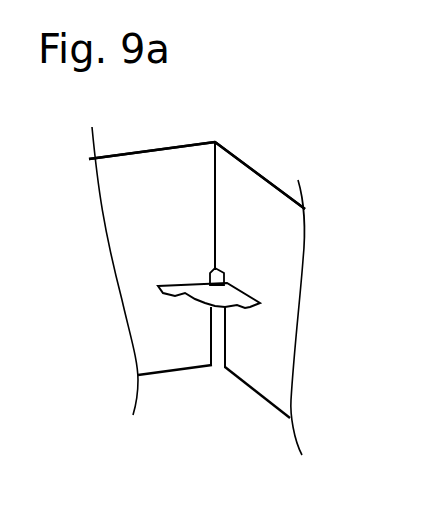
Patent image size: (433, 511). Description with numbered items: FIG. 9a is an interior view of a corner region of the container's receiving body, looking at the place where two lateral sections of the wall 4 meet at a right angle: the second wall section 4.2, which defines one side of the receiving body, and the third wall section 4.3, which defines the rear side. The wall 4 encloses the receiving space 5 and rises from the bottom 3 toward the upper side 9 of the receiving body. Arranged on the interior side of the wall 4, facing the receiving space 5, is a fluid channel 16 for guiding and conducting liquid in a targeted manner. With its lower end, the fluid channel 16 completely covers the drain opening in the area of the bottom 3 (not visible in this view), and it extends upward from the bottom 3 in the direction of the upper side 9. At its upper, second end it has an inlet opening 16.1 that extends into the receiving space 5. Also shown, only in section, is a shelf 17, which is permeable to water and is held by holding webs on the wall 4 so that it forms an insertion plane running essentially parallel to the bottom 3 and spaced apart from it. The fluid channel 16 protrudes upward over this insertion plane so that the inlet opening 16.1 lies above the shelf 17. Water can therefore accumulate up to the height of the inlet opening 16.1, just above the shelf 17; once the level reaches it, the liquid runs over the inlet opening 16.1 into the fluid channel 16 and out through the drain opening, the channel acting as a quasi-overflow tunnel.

The bottom 3 is at (180, 412).
The wall 4 is at (213, 291).
The second wall section 4.2 is at (287, 285).
The third wall section 4.3 is at (142, 250).
The receiving space 5 is at (166, 172).
The upper side 9 is at (245, 155).
The fluid channel 16 is at (217, 340).
The inlet opening 16.1 is at (218, 270).
The shelf 17 is at (203, 293).